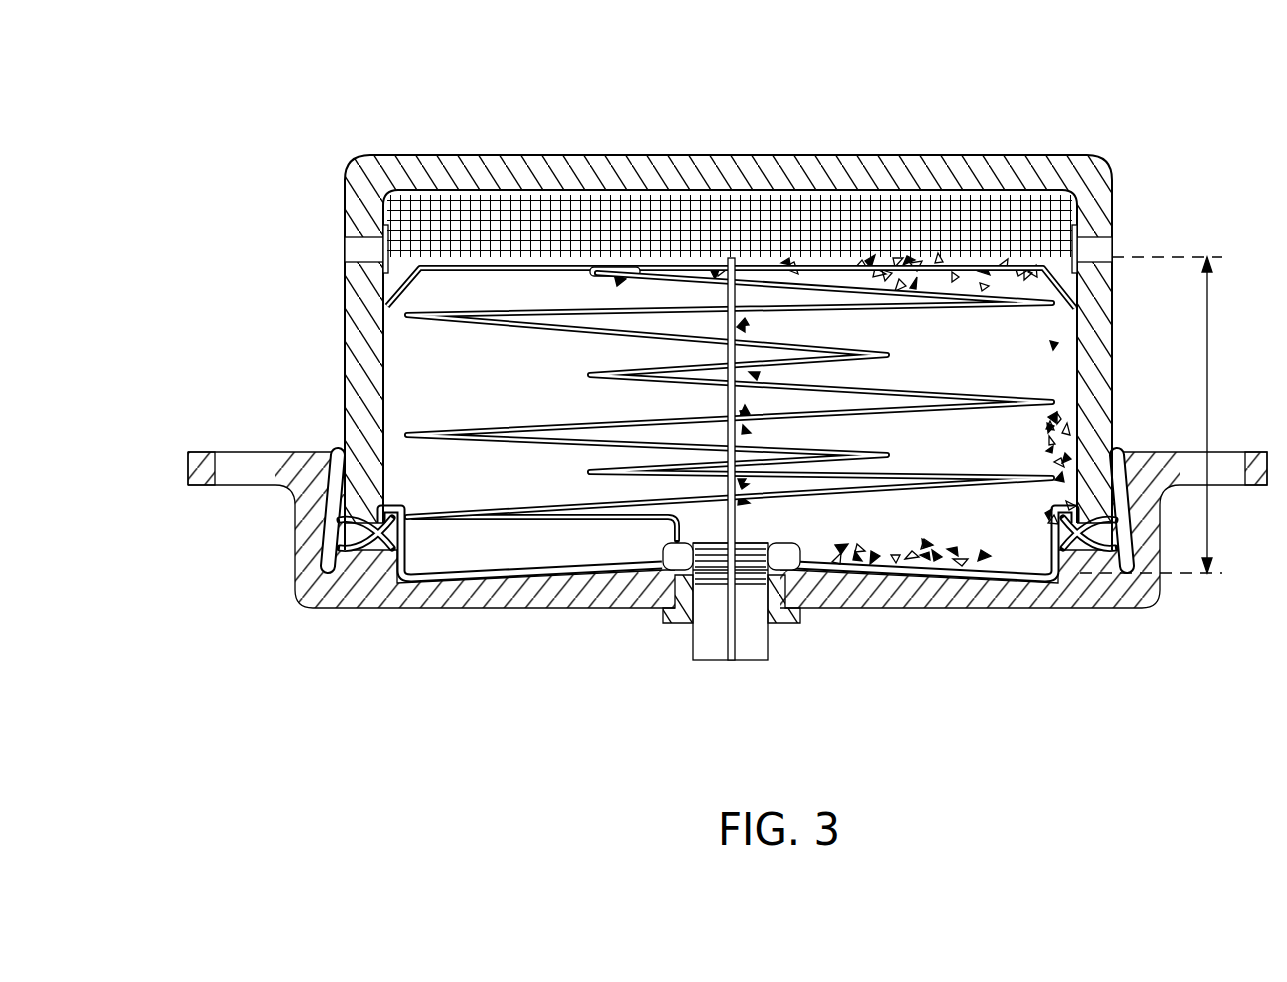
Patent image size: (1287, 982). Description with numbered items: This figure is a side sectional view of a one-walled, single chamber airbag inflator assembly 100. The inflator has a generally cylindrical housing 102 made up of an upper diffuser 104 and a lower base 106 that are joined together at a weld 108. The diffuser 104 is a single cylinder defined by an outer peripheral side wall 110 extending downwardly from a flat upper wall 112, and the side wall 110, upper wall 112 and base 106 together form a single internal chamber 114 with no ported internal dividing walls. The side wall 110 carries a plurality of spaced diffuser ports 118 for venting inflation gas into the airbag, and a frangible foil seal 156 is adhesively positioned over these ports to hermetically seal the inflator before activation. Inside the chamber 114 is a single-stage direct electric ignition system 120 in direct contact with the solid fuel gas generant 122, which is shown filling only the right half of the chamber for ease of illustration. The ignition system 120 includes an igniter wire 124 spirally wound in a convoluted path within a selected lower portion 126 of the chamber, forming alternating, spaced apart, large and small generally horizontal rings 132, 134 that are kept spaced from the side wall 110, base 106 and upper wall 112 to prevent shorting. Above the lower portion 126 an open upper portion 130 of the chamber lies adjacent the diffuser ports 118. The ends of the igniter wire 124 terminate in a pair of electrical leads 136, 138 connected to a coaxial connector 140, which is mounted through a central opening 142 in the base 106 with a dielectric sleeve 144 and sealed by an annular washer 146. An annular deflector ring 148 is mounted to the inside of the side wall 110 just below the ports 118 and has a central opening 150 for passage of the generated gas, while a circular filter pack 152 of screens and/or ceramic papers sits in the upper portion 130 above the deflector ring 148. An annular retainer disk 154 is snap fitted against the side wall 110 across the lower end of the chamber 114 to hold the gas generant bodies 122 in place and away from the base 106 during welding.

The inflator assembly 100 is at (330, 165).
The housing 102 is at (748, 152).
The upper diffuser 104 is at (856, 156).
The lower base 106 is at (575, 600).
The weld 108 is at (360, 548).
The outer peripheral side wall 110 is at (356, 360).
The upper wall 112 is at (966, 157).
The internal chamber 114 is at (462, 413).
The diffuser ports 118 is at (360, 256).
The direct electric ignition system 120 is at (503, 493).
The gas generant 122 is at (963, 580).
The igniter wire 124 is at (572, 520).
The lower portion 126 is at (1154, 415).
The upper portion 130 is at (1080, 270).
The large rings 132 is at (410, 320).
The small rings 134 is at (592, 375).
The electrical lead 136 is at (672, 528).
The electrical lead 138 is at (728, 490).
The coaxial connector 140 is at (713, 666).
The central opening 142 is at (818, 600).
The dielectric sleeve 144 is at (790, 625).
The annular washer 146 is at (660, 572).
The deflector ring 148 is at (468, 272).
The central opening 150 is at (607, 287).
The filter pack 152 is at (527, 225).
The retainer disk 154 is at (462, 580).
The frangible foil seal 156 is at (380, 226).